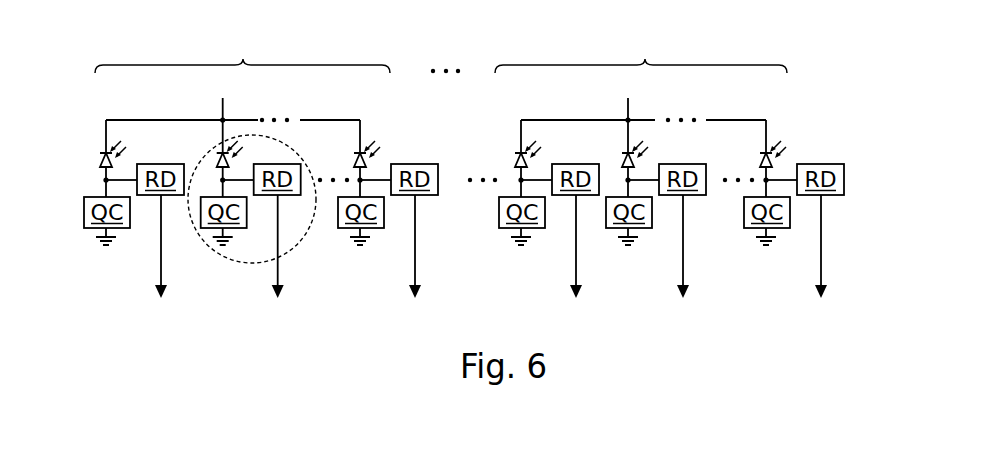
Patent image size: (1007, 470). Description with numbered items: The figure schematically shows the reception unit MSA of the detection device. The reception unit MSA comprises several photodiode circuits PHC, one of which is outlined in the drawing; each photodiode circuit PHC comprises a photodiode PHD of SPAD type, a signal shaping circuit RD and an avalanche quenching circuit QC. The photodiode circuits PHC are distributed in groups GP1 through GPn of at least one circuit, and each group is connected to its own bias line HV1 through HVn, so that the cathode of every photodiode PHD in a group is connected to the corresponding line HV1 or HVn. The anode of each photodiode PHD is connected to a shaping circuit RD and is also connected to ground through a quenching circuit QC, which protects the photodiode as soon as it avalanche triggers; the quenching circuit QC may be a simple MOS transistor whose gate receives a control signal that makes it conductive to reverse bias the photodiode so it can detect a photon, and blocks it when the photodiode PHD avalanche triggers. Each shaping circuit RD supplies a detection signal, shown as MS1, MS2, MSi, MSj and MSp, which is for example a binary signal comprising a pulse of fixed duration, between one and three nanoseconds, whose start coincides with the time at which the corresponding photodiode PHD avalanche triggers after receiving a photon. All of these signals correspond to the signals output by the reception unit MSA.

The first group of photodiode circuits GP1 is at (242, 52).
The n-th group of photodiode circuits GPn is at (641, 52).
The first bias line HV1 is at (233, 98).
The n-th bias line HVn is at (643, 98).
The photodiode PHD is at (217, 155).
The photodiode circuit PHC is at (302, 243).
The signal shaping circuit RD is at (473, 179).
The avalanche quenching circuit QC is at (437, 221).
The reception unit MSA is at (758, 97).
The first detection signal MS1 is at (161, 261).
The second detection signal MS2 is at (277, 261).
The i-th detection signal MSi is at (415, 261).
The j-th detection signal MSj is at (576, 261).
The p-th detection signal MSp is at (822, 261).